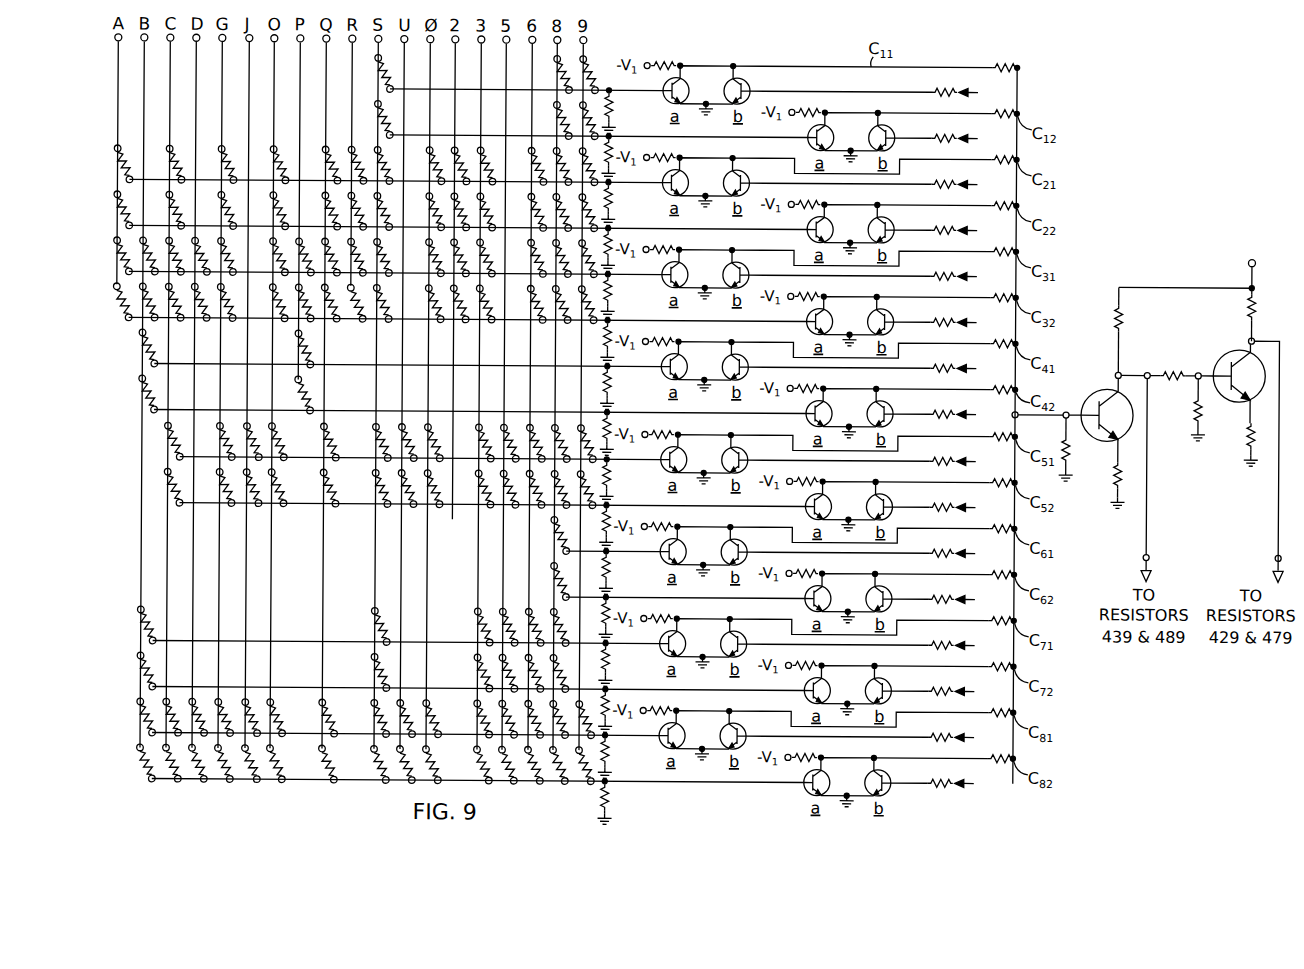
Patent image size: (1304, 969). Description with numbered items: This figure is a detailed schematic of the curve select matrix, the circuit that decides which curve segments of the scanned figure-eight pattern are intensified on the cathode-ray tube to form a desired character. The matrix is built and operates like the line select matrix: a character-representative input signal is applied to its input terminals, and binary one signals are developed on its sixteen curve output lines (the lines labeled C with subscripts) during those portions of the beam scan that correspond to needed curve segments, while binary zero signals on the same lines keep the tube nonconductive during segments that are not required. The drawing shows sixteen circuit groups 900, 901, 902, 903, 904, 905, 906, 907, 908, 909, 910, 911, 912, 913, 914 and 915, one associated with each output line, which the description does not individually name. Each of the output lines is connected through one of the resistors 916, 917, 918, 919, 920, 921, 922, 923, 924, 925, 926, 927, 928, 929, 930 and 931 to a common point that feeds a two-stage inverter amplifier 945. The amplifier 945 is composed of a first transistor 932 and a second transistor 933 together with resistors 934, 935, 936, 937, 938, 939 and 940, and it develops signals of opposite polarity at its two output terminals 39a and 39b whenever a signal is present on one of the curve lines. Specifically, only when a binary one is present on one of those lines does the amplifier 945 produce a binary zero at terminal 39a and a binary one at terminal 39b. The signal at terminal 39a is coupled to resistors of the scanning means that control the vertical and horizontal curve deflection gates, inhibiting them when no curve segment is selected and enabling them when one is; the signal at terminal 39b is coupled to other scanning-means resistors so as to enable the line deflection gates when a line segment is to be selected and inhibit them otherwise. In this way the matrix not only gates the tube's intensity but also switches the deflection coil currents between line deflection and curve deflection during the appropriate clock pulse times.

The transistor pair 900 is at (809, 91).
The transistor pair 901 is at (882, 138).
The transistor pair 902 is at (808, 183).
The transistor pair 903 is at (881, 230).
The transistor pair 904 is at (808, 275).
The transistor pair 905 is at (880, 322).
The transistor pair 906 is at (807, 367).
The transistor pair 907 is at (880, 414).
The transistor pair 908 is at (807, 460).
The transistor pair 909 is at (879, 507).
The transistor pair 910 is at (806, 552).
The transistor pair 911 is at (879, 599).
The transistor pair 912 is at (805, 644).
The transistor pair 913 is at (878, 691).
The transistor pair 914 is at (805, 736).
The transistor pair 915 is at (878, 783).
The resistor 916 is at (995, 64).
The resistor 917 is at (990, 110).
The resistor 918 is at (990, 156).
The resistor 919 is at (990, 202).
The resistor 920 is at (990, 248).
The resistor 921 is at (990, 294).
The resistor 922 is at (990, 340).
The resistor 923 is at (990, 386).
The resistor 924 is at (990, 433).
The resistor 925 is at (990, 479).
The resistor 926 is at (990, 525).
The resistor 927 is at (990, 571).
The resistor 928 is at (990, 617).
The resistor 929 is at (990, 663).
The resistor 930 is at (990, 709).
The resistor 931 is at (990, 755).
The transistor 932 is at (1098, 399).
The transistor 933 is at (1225, 357).
The resistor 934 is at (1069, 452).
The resistor 935 is at (1117, 480).
The resistor 936 is at (1121, 318).
The resistor 937 is at (1174, 369).
The resistor 938 is at (1196, 420).
The resistor 939 is at (1249, 444).
The resistor 940 is at (1253, 302).
The two-stage inverter amplifier 945 is at (1178, 409).
The output terminal 39a is at (1145, 554).
The output terminal 39b is at (1277, 554).